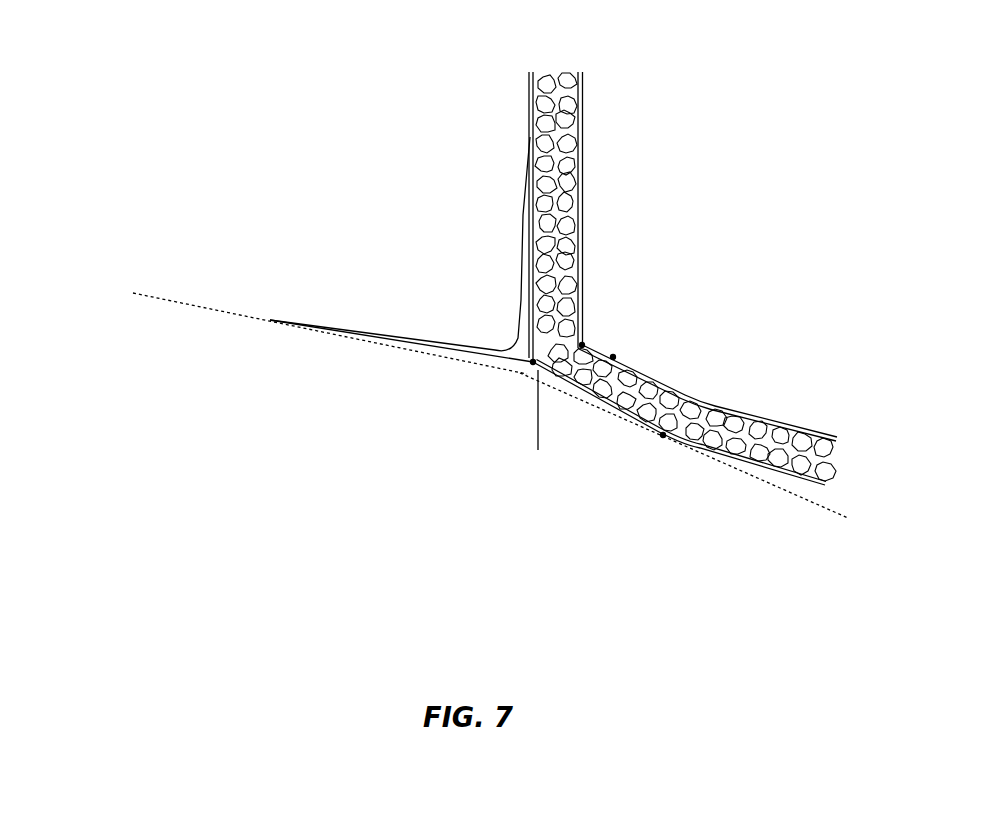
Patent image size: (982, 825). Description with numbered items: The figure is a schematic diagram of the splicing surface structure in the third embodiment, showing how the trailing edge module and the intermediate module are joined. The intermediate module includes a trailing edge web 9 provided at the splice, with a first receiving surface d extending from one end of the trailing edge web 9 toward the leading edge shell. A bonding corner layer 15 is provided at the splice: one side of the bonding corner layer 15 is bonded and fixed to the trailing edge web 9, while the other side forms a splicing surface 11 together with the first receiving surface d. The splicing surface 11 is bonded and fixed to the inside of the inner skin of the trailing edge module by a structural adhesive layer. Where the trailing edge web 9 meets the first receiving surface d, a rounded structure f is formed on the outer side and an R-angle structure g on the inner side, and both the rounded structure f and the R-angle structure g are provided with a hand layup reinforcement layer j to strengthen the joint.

The trailing edge web 9 is at (570, 190).
The bonding corner layer 15 is at (502, 357).
The splicing surface 11 is at (210, 307).
The R-angle structure g is at (582, 345).
The hand layup reinforcement layer j is at (613, 357).
The rounded structure f is at (538, 450).
The first receiving surface d is at (663, 435).